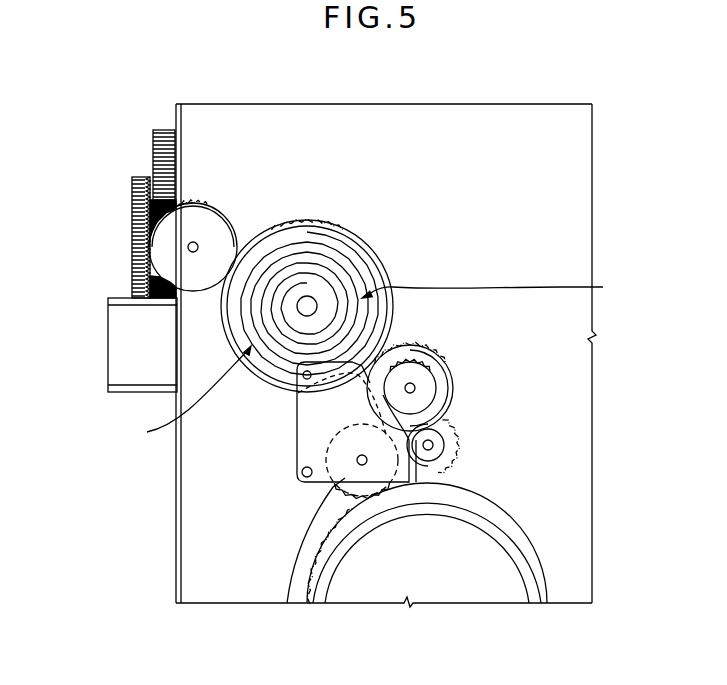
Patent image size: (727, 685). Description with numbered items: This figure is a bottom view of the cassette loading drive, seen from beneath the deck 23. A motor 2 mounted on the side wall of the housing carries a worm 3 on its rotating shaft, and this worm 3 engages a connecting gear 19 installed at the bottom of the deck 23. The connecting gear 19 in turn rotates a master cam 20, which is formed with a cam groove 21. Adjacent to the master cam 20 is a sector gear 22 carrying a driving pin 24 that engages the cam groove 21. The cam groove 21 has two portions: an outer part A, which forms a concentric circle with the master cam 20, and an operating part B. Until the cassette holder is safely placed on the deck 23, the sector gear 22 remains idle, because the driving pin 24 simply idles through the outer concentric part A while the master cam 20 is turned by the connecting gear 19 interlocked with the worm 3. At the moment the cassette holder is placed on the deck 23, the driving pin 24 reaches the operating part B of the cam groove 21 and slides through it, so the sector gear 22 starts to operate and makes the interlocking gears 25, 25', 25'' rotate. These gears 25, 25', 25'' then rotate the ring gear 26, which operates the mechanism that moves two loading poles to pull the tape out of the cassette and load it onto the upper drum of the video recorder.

The motor 2 is at (115, 320).
The worm 3 is at (132, 192).
The connecting gear 19 is at (170, 247).
The master cam 20 is at (273, 228).
The cam groove 21 is at (258, 313).
The sector gear 22 is at (305, 468).
The deck 23 is at (513, 104).
The driving pin 24 is at (297, 375).
The interlocking gear 25 is at (501, 386).
The interlocking gear 25' is at (521, 446).
The interlocking gear 25'' is at (308, 562).
The ring gear 26 is at (540, 557).
The outer part of the cam groove A is at (188, 397).
The operating part of the cam groove B is at (495, 280).